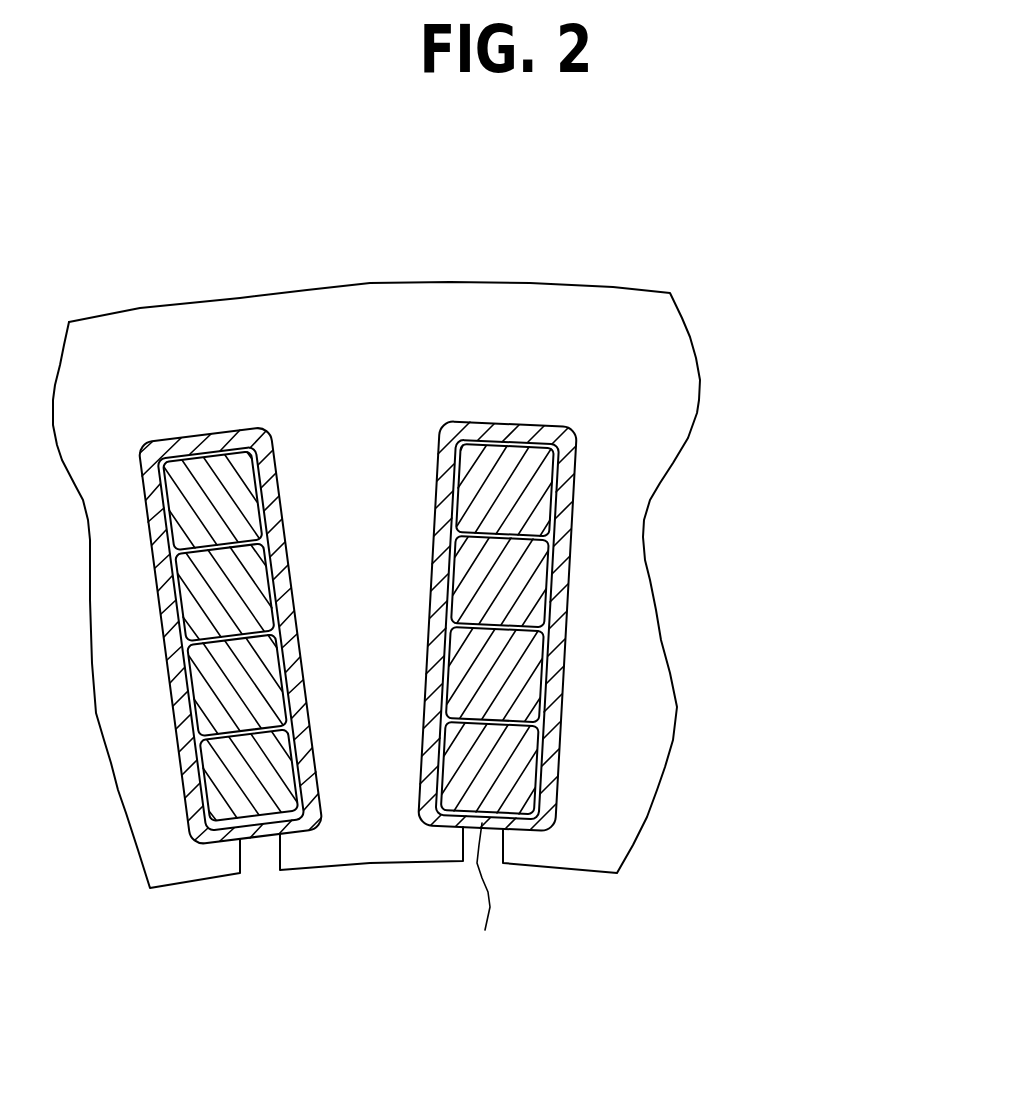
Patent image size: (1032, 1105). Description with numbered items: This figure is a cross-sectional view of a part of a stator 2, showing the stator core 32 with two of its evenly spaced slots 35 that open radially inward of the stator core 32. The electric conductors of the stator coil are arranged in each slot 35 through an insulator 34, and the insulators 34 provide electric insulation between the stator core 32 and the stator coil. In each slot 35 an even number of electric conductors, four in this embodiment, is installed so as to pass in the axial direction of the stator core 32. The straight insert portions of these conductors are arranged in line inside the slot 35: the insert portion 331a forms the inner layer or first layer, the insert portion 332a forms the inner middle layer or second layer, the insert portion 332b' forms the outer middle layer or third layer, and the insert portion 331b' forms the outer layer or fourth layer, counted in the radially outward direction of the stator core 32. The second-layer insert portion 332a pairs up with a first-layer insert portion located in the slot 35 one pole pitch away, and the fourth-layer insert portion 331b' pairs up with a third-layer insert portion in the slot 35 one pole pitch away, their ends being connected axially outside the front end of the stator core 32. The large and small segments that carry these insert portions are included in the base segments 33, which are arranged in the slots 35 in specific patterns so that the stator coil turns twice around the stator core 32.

The stator 2 is at (642, 223).
The stator core 32 is at (394, 320).
The base segments 33 is at (535, 632).
The insert portion 331a is at (632, 768).
The insert portion 332a is at (510, 687).
The insert portion 332b' is at (638, 581).
The insert portion 331b' is at (640, 490).
The insulator 34 is at (552, 428).
The slot 35 is at (485, 896).